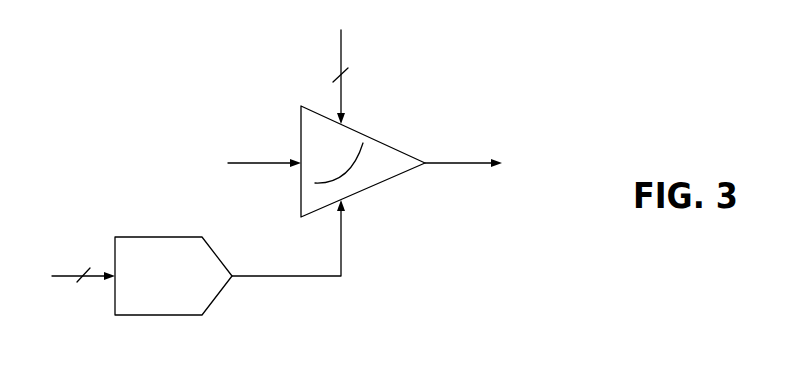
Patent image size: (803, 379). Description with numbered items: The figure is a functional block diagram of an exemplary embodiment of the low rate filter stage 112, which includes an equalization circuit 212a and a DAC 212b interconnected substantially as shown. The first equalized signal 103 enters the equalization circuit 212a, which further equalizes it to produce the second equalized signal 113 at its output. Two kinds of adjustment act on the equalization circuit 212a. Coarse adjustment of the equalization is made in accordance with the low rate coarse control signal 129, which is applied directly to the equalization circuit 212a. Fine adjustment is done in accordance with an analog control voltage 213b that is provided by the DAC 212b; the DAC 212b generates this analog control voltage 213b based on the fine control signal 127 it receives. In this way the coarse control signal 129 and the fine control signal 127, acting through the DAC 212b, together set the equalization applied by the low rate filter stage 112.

The first equalized signal 103 is at (267, 160).
The low rate filter stage 112 is at (424, 219).
The second equalized signal 113 is at (455, 160).
The fine control signal 127 is at (60, 275).
The low rate coarse control signal 129 is at (341, 49).
The equalization circuit 212a is at (380, 137).
The DAC 212b is at (173, 317).
The analog control voltage 213b is at (317, 278).